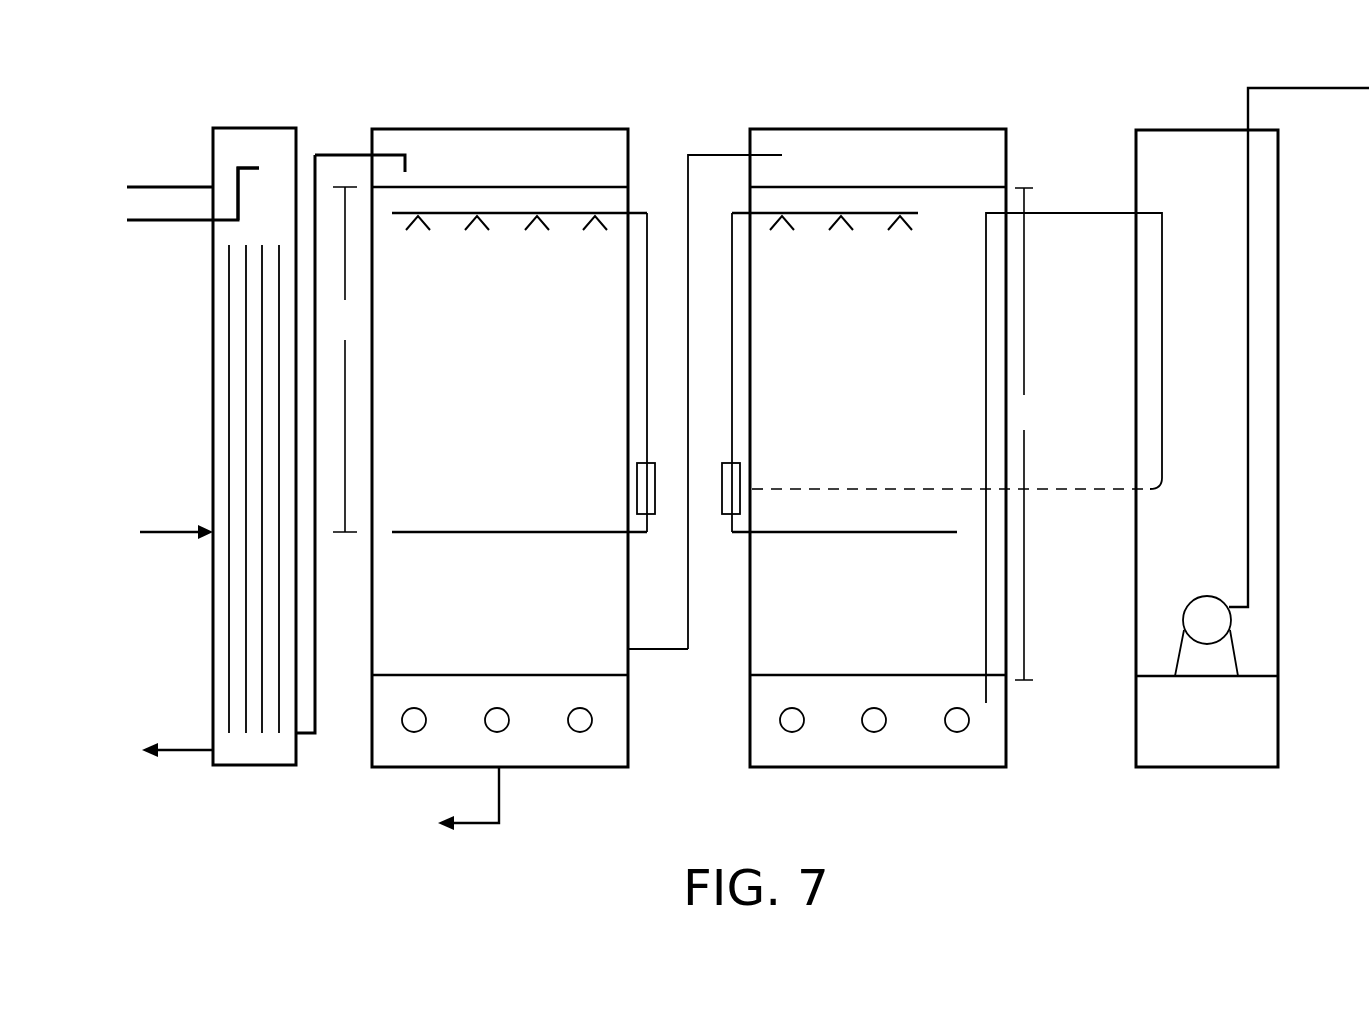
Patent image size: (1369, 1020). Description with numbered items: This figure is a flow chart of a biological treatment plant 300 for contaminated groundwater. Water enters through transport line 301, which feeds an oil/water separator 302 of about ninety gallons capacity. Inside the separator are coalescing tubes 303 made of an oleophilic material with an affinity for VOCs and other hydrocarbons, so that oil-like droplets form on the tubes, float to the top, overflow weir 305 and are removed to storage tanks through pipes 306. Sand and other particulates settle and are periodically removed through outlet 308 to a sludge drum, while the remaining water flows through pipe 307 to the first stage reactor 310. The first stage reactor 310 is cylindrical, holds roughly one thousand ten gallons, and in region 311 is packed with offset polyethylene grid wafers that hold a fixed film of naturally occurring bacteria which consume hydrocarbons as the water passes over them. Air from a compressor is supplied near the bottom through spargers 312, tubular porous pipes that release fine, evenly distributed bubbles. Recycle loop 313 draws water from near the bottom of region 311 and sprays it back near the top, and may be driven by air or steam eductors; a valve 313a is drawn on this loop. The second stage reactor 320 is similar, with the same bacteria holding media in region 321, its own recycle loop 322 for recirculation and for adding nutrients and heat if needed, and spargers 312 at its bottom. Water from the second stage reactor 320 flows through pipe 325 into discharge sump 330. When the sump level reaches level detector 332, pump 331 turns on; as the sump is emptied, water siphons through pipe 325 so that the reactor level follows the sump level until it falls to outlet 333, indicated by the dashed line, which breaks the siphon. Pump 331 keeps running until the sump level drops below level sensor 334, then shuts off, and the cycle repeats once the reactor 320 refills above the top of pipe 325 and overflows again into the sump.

The biological treatment plant 300 is at (1010, 50).
The transport line 301 is at (190, 531).
The oil/water separator 302 is at (228, 128).
The coalescing tubes 303 is at (229, 320).
The weir 305 is at (255, 168).
The pipes 306 is at (156, 186).
The pipe 307 is at (303, 734).
The outlet 308 is at (190, 750).
The first stage reactor 310 is at (500, 128).
The region 311 is at (360, 343).
The spargers 312 is at (782, 726).
The recycle loop 313 is at (640, 212).
The valve 313a is at (650, 515).
The second stage reactor 320 is at (867, 128).
The region 321 is at (1030, 434).
The recycle loop 322 is at (732, 212).
The pipe 325 is at (1058, 212).
The discharge sump 330 is at (1170, 128).
The pump 331 is at (1192, 613).
The level detector 332 is at (1271, 171).
The outlet 333 is at (1173, 488).
The level sensor 334 is at (1270, 638).